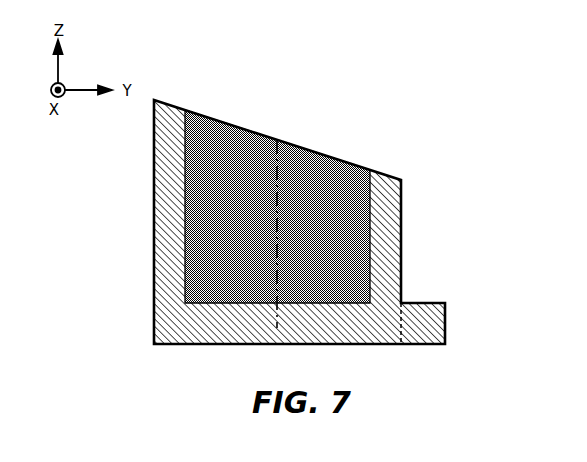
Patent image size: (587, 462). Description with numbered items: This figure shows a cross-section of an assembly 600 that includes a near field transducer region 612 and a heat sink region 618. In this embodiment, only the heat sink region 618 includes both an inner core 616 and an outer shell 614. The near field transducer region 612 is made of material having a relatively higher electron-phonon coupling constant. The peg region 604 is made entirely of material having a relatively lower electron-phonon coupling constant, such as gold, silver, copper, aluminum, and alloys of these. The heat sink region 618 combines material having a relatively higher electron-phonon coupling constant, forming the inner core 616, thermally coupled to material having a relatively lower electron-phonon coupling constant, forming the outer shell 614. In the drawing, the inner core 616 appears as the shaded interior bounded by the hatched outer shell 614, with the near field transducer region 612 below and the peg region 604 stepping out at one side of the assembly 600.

The assembly 600 is at (155, 72).
The peg region 604 is at (432, 312).
The near field transducer region 612 is at (141, 315).
The outer shell 614 is at (386, 231).
The inner core 616 is at (237, 165).
The heat sink region 618 is at (143, 176).